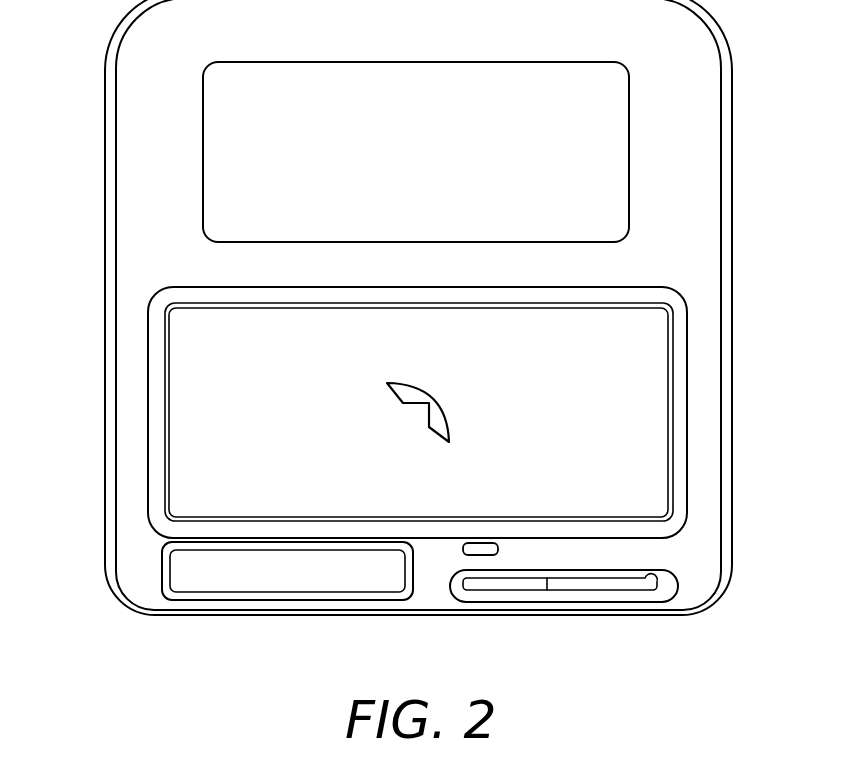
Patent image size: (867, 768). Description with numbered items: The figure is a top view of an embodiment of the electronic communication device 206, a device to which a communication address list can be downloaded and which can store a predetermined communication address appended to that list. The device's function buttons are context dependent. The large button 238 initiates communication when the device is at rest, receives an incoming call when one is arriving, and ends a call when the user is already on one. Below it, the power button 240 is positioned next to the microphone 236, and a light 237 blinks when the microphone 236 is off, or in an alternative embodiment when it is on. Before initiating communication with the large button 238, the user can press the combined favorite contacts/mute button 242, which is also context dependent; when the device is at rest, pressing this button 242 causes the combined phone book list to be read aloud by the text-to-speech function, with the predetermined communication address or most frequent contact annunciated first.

The electronic communication device 206 is at (733, 135).
The power button 240 is at (222, 176).
The large button 238 is at (222, 365).
The combined favorite contacts/mute button 242 is at (178, 577).
The light 237 is at (467, 550).
The microphone 236 is at (482, 585).